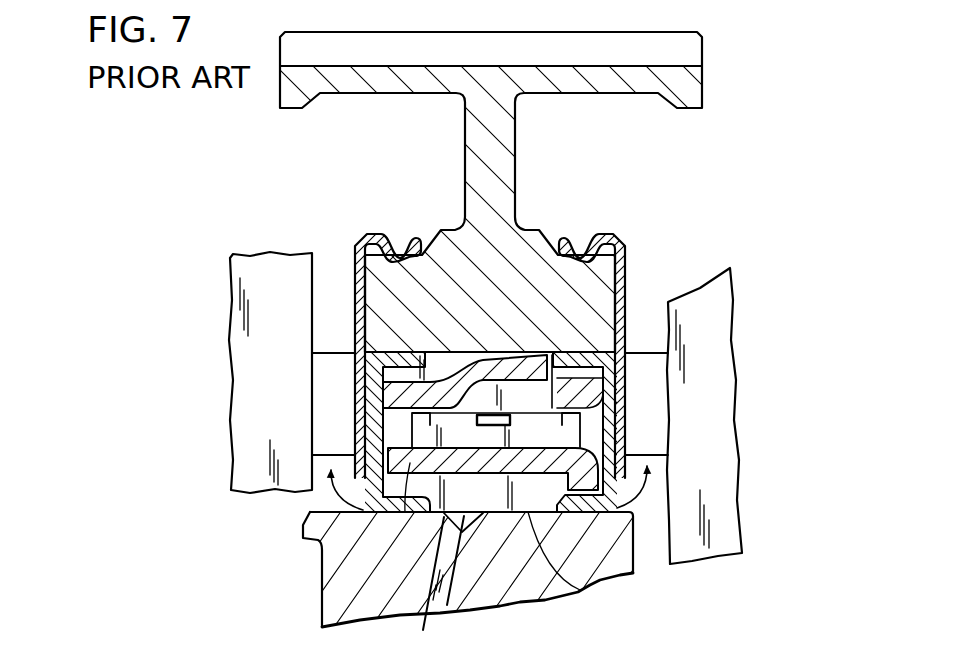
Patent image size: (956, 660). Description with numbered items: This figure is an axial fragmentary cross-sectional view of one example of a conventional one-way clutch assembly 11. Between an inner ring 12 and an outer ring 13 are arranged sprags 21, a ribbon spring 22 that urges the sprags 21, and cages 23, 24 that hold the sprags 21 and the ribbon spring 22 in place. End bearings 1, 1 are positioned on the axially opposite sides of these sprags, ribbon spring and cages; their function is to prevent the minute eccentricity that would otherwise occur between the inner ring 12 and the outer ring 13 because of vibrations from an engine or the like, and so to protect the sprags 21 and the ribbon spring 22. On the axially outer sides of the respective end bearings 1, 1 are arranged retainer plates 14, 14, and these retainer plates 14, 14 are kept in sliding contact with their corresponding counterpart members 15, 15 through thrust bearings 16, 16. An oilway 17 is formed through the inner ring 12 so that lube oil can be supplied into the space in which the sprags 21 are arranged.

The end bearing 1 is at (333, 545).
The support rail 11 is at (731, 60).
The inner ring 12 is at (620, 560).
The outer ring 13 is at (497, 305).
The retainer plate 14 is at (602, 254).
The counterpart member 15 is at (270, 280).
The thrust bearing 16 is at (337, 365).
The oilway 17 is at (452, 588).
The sprag 21 is at (580, 591).
The ribbon spring 22 is at (507, 420).
The cage 23 is at (322, 590).
The cage 24 is at (397, 392).